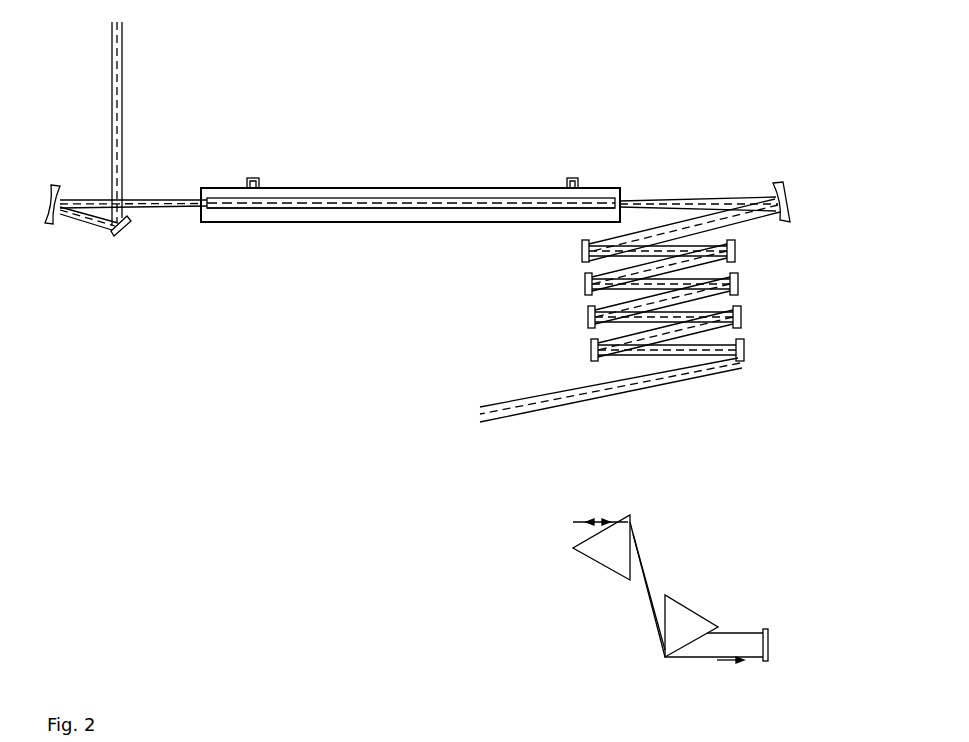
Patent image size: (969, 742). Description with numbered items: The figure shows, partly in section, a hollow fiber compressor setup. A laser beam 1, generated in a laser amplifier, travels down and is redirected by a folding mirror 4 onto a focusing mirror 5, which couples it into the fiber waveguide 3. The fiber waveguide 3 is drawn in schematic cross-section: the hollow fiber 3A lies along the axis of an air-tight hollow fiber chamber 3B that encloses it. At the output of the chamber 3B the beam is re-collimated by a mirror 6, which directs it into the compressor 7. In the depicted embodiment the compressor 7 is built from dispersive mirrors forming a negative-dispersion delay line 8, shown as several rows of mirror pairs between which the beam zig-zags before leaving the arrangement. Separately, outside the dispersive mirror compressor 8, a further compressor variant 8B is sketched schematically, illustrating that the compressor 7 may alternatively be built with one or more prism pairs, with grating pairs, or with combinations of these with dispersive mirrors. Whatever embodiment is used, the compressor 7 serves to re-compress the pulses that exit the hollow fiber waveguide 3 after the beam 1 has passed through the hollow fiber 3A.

The laser beam 1 is at (123, 67).
The fiber waveguide 3 is at (478, 183).
The hollow fiber 3A is at (362, 193).
The hollow fiber chamber 3B is at (308, 213).
The folding mirror 4 is at (135, 228).
The focusing mirror 5 is at (56, 226).
The mirror 6 is at (782, 183).
The compressor 7 is at (661, 338).
The negative-dispersion delay line 8 is at (676, 318).
The prism pair folding element detail 8B is at (696, 559).